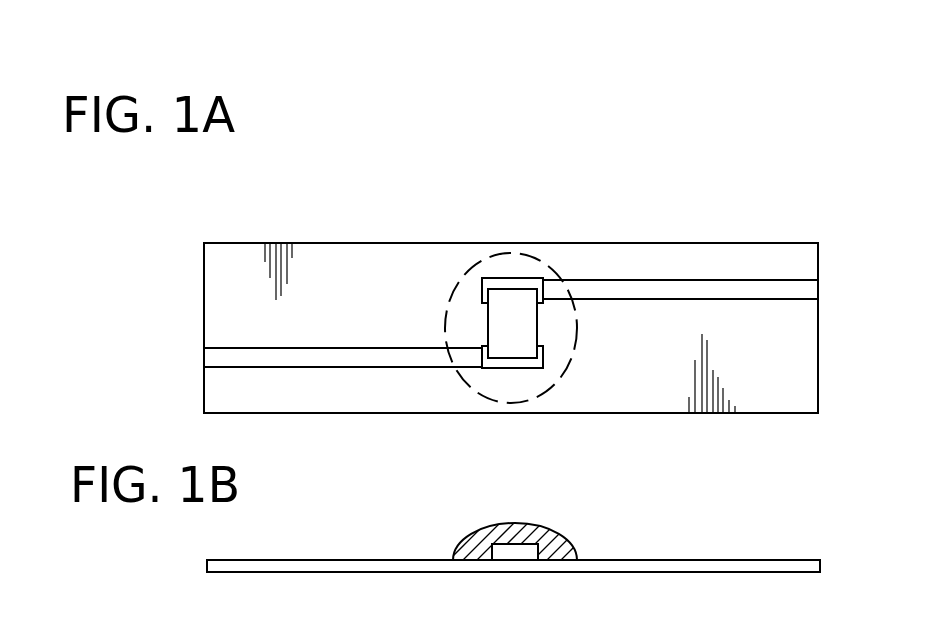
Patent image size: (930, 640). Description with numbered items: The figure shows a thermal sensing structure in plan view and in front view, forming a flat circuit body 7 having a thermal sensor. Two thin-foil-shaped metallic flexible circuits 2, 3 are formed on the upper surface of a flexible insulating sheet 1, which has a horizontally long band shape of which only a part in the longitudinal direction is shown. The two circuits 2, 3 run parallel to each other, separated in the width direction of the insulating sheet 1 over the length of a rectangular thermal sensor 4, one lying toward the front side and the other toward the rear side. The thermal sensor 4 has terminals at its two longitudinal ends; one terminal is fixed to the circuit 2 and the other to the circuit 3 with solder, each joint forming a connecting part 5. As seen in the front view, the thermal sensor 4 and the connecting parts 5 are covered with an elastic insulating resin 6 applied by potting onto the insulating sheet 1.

In FIG. 1A, the insulating sheet 1 is at (736, 243).
In FIG. 1B, the insulating sheet 1 is at (733, 560).
In FIG. 1A, the circuit 2 is at (639, 289).
In FIG. 1A, the circuit 3 is at (348, 358).
In FIG. 1A, the thermal sensor 4 is at (538, 325).
In FIG. 1B, the thermal sensor 4 is at (553, 560).
In FIG. 1A, the connecting part 5 is at (513, 278).
In FIG. 1A, the insulating resin 6 is at (485, 258).
In FIG. 1B, the insulating resin 6 is at (560, 533).
In FIG. 1A, the flat circuit body 7 is at (606, 154).